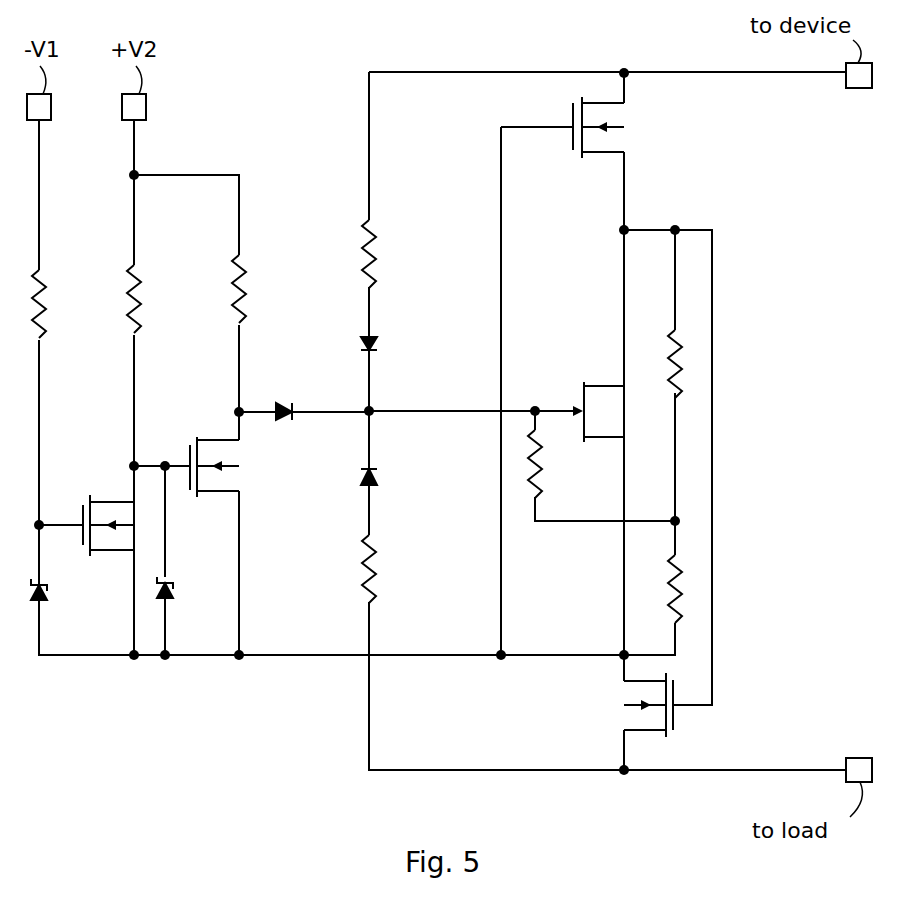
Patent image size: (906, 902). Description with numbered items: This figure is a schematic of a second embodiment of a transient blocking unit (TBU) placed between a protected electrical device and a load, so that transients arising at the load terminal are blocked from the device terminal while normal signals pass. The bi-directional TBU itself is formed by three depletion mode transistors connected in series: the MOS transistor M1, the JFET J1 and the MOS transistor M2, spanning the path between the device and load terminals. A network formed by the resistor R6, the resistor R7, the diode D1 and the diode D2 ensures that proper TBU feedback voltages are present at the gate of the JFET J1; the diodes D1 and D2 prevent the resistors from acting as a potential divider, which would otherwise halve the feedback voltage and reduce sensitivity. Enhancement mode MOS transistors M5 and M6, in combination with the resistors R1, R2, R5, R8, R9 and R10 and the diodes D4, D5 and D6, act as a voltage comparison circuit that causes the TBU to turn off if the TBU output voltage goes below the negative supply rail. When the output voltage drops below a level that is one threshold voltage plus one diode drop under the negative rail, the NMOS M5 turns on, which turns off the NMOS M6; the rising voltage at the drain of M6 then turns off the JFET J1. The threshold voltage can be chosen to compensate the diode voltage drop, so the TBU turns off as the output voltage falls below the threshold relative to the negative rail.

The resistor R1 is at (668, 346).
The resistor R2 is at (668, 600).
The resistor R5 is at (538, 462).
The resistor R6 is at (375, 250).
The resistor R7 is at (362, 572).
The resistor R8 is at (52, 298).
The resistor R9 is at (146, 295).
The resistor R10 is at (248, 290).
The diode D1 is at (358, 343).
The diode D2 is at (359, 481).
The diode D4 is at (43, 598).
The diode D5 is at (178, 596).
The diode D6 is at (281, 402).
The depletion mode transistor M1 is at (573, 98).
The depletion mode transistor M2 is at (669, 735).
The enhancement mode MOS transistor M5 is at (90, 497).
The enhancement mode MOS transistor M6 is at (197, 438).
The depletion mode JFET transistor J1 is at (584, 393).